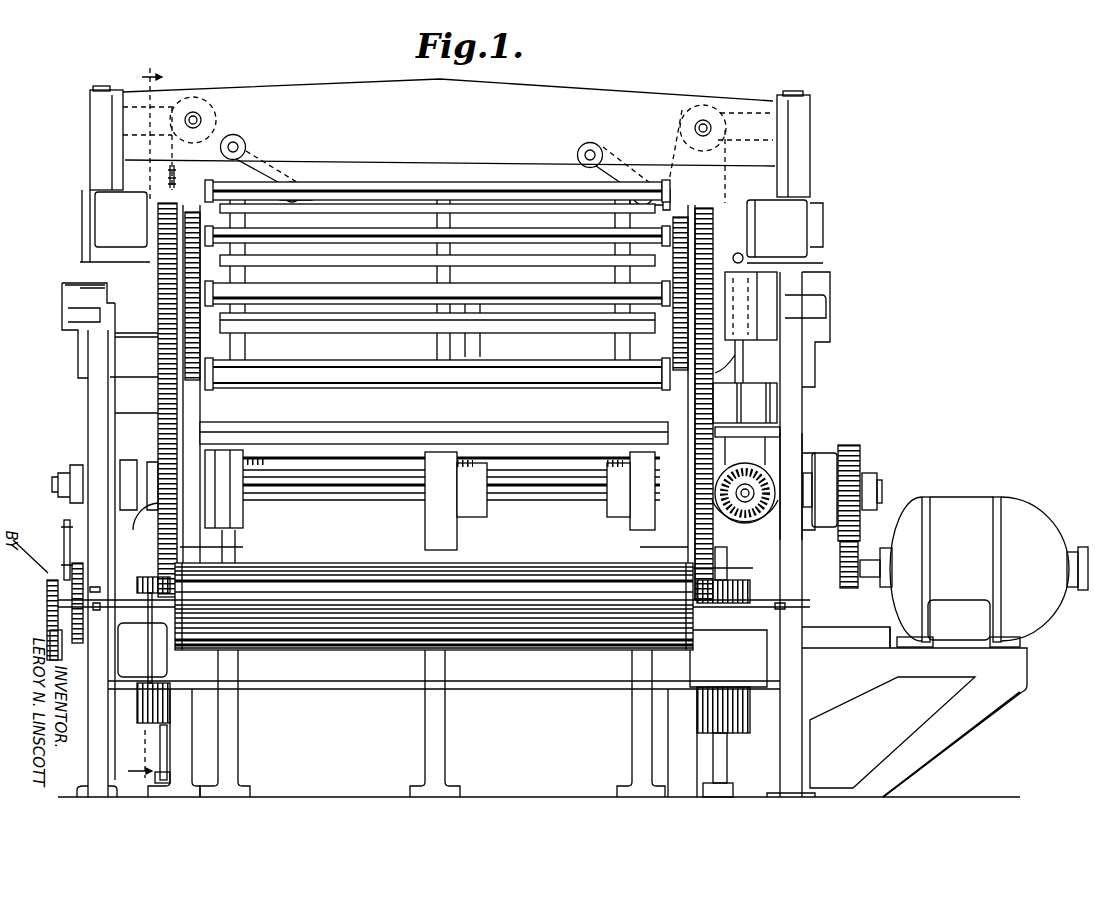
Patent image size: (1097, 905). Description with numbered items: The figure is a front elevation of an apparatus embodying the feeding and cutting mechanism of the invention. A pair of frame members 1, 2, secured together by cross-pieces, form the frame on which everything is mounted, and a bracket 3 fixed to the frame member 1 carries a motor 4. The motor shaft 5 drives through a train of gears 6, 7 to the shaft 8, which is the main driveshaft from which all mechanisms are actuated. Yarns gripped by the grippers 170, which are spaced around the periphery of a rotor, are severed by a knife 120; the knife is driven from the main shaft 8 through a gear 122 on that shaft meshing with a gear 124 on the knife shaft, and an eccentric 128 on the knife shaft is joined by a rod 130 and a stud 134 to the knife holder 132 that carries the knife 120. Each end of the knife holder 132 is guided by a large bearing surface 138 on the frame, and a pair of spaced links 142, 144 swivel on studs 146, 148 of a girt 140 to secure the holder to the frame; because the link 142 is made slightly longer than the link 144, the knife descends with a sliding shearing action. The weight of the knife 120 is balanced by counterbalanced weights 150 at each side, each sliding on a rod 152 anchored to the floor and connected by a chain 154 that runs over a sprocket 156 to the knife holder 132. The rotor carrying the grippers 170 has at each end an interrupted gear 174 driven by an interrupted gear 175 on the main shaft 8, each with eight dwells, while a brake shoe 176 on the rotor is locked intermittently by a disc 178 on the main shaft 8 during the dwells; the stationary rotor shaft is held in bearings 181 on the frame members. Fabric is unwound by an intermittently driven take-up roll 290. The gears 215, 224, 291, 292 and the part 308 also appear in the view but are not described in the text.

The frame member 1 is at (801, 413).
The frame member 2 is at (80, 438).
The bracket 3 is at (1013, 686).
The motor 4 is at (968, 506).
The motor shaft 5 is at (877, 587).
The gear 6 is at (846, 590).
The gear 7 is at (860, 456).
The shaft 8 is at (558, 501).
The knife 120 is at (362, 248).
The gear 122 is at (778, 521).
The gear 124 is at (765, 471).
The eccentric 128 is at (760, 450).
The rod 130 is at (744, 362).
The knife holder 132 is at (483, 205).
The stud 134 is at (744, 258).
The bearing surface 138 is at (90, 220).
The girt 140 is at (562, 92).
The link 142 is at (294, 181).
The link 144 is at (636, 184).
The stud 146 is at (238, 142).
The stud 148 is at (589, 148).
The counterbalanced weight 150 is at (142, 715).
The rod 152 is at (160, 746).
The chain 154 is at (168, 180).
The sprocket 156 is at (197, 100).
The gripper 170 is at (507, 385).
The interrupted gear 174 is at (192, 212).
The interrupted gear 175 is at (193, 478).
The brake shoe 176 is at (180, 227).
The disc 178 is at (180, 547).
The bearing 181 is at (64, 293).
The gear 215 is at (167, 441).
The roll support 224 is at (255, 247).
The take-up roll 290 is at (485, 570).
The gear housing 291 is at (133, 608).
The gear 292 is at (83, 577).
The link 308 is at (64, 517).